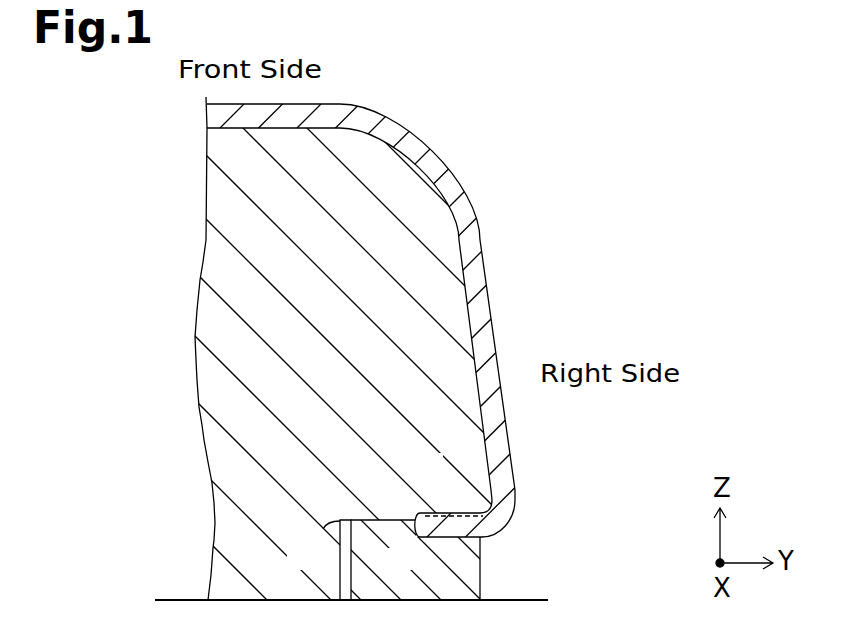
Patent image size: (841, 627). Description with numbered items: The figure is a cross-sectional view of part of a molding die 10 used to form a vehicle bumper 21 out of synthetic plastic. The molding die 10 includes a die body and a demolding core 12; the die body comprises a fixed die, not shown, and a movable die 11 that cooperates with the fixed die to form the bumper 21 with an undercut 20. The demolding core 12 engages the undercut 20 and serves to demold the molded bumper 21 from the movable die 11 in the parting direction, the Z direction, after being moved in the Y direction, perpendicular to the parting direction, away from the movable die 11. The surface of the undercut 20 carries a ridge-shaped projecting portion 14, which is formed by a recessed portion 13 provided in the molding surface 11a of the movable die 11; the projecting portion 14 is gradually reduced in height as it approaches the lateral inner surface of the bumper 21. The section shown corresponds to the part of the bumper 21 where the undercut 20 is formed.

The molding die 10 is at (161, 200).
The movable die 11 is at (208, 376).
The molding surface 11a is at (328, 527).
The demolding core 12 is at (474, 582).
The recessed portion 13 is at (420, 526).
The projecting portion 14 is at (442, 512).
The undercut 20 is at (455, 539).
The bumper 21 is at (481, 204).